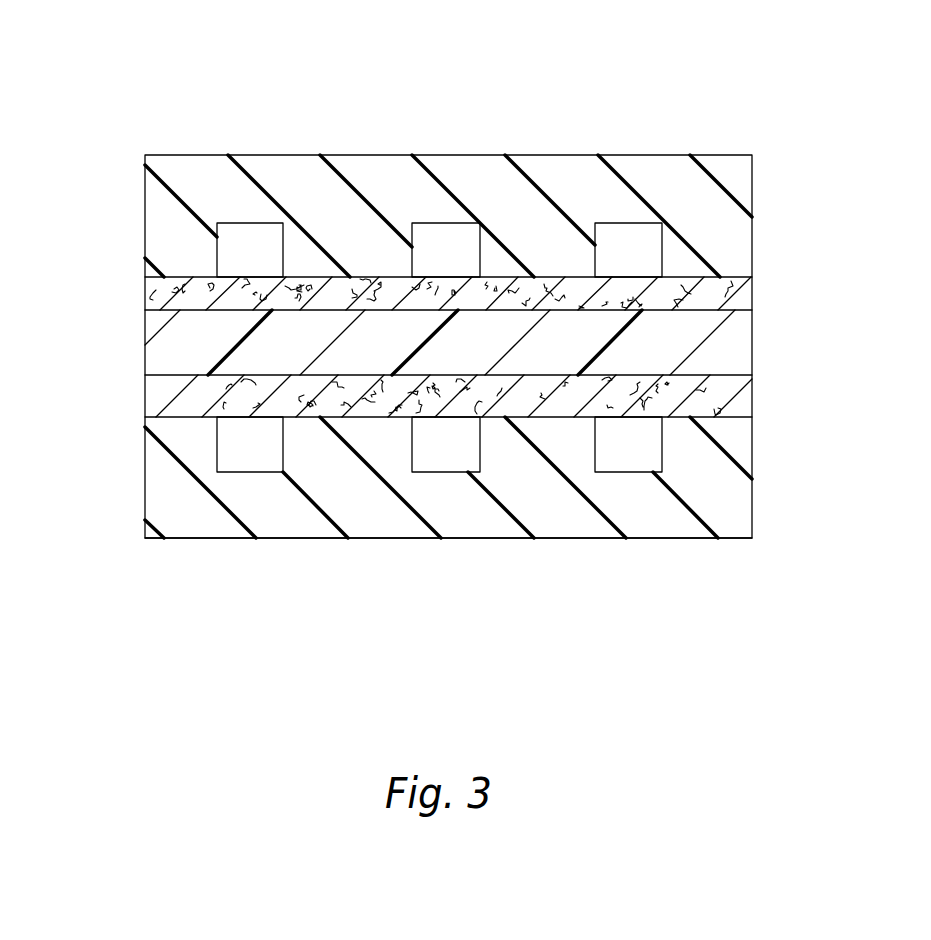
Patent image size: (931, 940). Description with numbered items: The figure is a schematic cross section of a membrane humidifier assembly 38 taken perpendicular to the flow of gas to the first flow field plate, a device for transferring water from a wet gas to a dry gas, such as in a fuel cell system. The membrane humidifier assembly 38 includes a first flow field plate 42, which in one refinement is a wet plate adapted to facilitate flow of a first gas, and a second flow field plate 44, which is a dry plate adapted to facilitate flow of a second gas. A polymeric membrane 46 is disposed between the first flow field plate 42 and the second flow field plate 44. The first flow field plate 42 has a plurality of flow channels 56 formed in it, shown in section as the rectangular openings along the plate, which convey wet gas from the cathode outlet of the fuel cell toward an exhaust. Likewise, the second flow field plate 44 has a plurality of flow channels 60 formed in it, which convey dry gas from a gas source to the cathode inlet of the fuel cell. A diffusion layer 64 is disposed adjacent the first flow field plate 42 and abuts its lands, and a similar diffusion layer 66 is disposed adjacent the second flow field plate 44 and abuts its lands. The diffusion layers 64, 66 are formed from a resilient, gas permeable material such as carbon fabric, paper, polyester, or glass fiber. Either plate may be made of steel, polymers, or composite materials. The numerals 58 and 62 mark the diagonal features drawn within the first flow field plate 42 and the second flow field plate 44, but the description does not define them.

The membrane humidifier assembly 38 is at (240, 105).
The first flow field plate 42 is at (533, 155).
The second flow field plate 44 is at (362, 538).
The polymeric membrane 46 is at (745, 335).
The flow channels 56 is at (233, 238).
The upper conductive traces 58 is at (347, 277).
The flow channels 60 is at (218, 463).
The lower conductive traces 62 is at (323, 418).
The diffusion layer 64 is at (146, 278).
The diffusion layer 66 is at (152, 388).